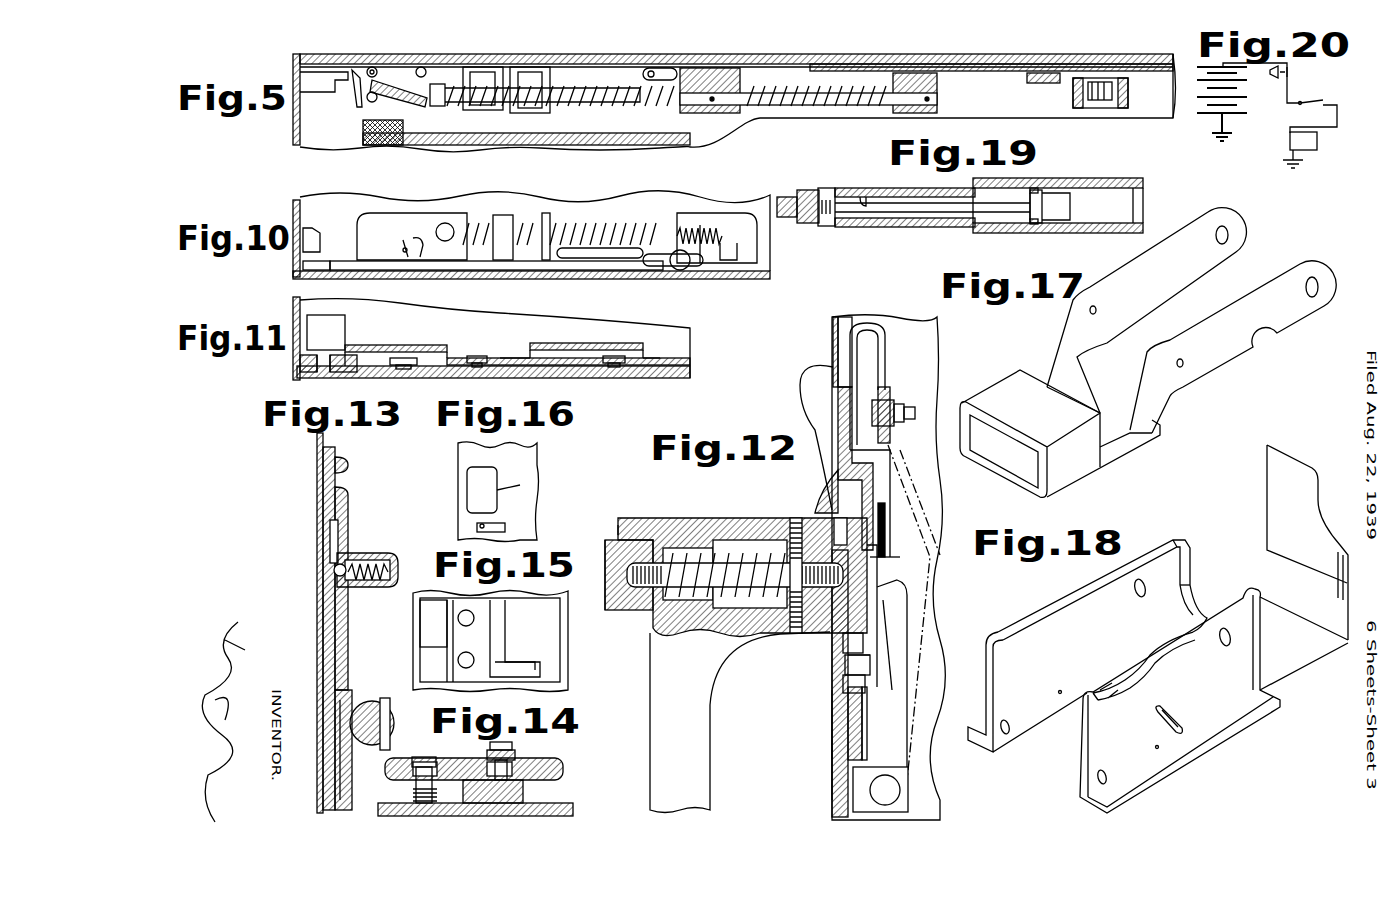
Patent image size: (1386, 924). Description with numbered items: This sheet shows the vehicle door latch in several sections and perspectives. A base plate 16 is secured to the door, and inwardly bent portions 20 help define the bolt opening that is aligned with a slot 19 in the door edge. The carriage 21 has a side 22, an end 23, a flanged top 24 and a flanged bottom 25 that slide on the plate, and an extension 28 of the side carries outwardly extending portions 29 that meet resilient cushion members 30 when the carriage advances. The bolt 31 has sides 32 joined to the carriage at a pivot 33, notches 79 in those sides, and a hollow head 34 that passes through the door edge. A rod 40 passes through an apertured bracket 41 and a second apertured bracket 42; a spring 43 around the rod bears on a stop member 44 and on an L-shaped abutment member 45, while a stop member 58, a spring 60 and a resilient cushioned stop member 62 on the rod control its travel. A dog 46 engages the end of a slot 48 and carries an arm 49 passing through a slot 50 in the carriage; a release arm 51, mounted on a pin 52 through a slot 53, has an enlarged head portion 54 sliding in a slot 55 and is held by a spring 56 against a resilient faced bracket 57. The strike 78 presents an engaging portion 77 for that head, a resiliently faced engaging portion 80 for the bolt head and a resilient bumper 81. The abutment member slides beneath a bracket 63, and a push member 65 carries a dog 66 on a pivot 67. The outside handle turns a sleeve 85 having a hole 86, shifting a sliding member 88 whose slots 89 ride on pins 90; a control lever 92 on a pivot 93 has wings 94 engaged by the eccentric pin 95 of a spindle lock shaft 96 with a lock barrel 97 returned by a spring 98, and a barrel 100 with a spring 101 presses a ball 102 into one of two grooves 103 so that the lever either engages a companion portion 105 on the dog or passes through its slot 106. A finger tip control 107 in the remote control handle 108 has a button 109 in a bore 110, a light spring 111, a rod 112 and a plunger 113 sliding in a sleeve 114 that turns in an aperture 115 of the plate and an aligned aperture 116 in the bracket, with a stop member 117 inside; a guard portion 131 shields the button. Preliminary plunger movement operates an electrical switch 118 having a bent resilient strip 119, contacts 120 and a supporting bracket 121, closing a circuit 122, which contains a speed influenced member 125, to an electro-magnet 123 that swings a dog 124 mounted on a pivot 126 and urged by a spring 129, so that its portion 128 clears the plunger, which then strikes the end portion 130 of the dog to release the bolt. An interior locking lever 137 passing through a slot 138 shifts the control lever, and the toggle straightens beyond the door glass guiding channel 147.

In FIG. 13, the base plate 16 is at (320, 655).
In FIG. 14, the base plate 16 is at (565, 805).
In FIG. 12, the base plate 16 is at (830, 695).
In FIG. 16, the slot 19 is at (520, 485).
In FIG. 5, the bent portions 20 is at (316, 95).
In FIG. 5, the carriage 21 is at (470, 66).
In FIG. 10, the carriage 21 is at (425, 220).
In FIG. 18, the carriage 21 is at (1019, 616).
In FIG. 18, the side 22 is at (1128, 668).
In FIG. 18, the end 23 is at (1183, 550).
In FIG. 18, the flanged top 24 is at (1058, 600).
In FIG. 18, the flanged bottom 25 is at (1100, 740).
In FIG. 18, the extension 28 is at (1287, 593).
In FIG. 5, the outwardly extending portions 29 is at (555, 66).
In FIG. 10, the outwardly extending portions 29 is at (548, 218).
In FIG. 18, the outwardly extending portions 29 is at (1270, 485).
In FIG. 10, the resilient cushion members 30 is at (510, 218).
In FIG. 5, the bolt 31 is at (356, 92).
In FIG. 10, the bolt 31 is at (338, 250).
In FIG. 17, the bolt 31 is at (1137, 455).
In FIG. 17, the bolt sides 32 is at (1215, 330).
In FIG. 10, the pivot 33 is at (455, 227).
In FIG. 5, the hollow head 34 is at (296, 72).
In FIG. 16, the hollow head 34 is at (463, 485).
In FIG. 17, the hollow head 34 is at (1000, 383).
In FIG. 5, the rod 40 is at (612, 104).
In FIG. 10, the apertured bracket 41 is at (738, 218).
In FIG. 13, the second apertured bracket 42 is at (350, 625).
In FIG. 5, the spring 43 is at (560, 106).
In FIG. 10, the spring 43 is at (585, 222).
In FIG. 5, the stop member 44 is at (428, 102).
In FIG. 5, the L-shaped abutment member 45 is at (783, 56).
In FIG. 13, the L-shaped abutment member 45 is at (334, 735).
In FIG. 12, the L-shaped abutment member 45 is at (845, 715).
In FIG. 5, the dog 46 is at (380, 70).
In FIG. 5, the slot 48 is at (425, 68).
In FIG. 10, the arm 49 is at (422, 270).
In FIG. 10, the slot 50 is at (410, 240).
In FIG. 18, the slot 50 is at (1172, 712).
In FIG. 10, the release arm 51 is at (500, 265).
In FIG. 10, the pin 52 is at (686, 268).
In FIG. 5, the slot 53 is at (665, 67).
In FIG. 10, the slot 53 is at (655, 268).
In FIG. 10, the enlarged head portion 54 is at (305, 258).
In FIG. 16, the enlarged head portion 54 is at (505, 528).
In FIG. 16, the slot 55 is at (478, 525).
In FIG. 10, the spring 56 is at (700, 210).
In FIG. 10, the resilient faced bracket 57 is at (730, 250).
In FIG. 5, the stop member 58 is at (710, 114).
In FIG. 5, the spring 60 is at (768, 106).
In FIG. 5, the resilient cushioned stop member 62 is at (912, 109).
In FIG. 13, the resilient cushioned stop member 62 is at (392, 705).
In FIG. 5, the bracket 63 is at (1032, 84).
In FIG. 14, the bracket 63 is at (525, 790).
In FIG. 12, the bracket 63 is at (870, 705).
In FIG. 5, the push member 65 is at (1162, 70).
In FIG. 13, the push member 65 is at (330, 700).
In FIG. 12, the push member 65 is at (835, 745).
In FIG. 5, the dog 66 is at (1075, 106).
In FIG. 12, the dog 66 is at (895, 685).
In FIG. 12, the pivot 67 is at (900, 788).
In FIG. 15, the engaging portion 77 is at (540, 672).
In FIG. 15, the strike 78 is at (530, 652).
In FIG. 17, the notches 79 is at (1155, 431).
In FIG. 15, the resiliently faced engaging portion 80 is at (495, 645).
In FIG. 15, the resilient bumper 81 is at (428, 640).
In FIG. 11, the sleeve 85 is at (336, 374).
In FIG. 11, the hole 86 is at (312, 374).
In FIG. 11, the sliding member 88 is at (543, 352).
In FIG. 11, the slots 89 is at (605, 352).
In FIG. 11, the pins 90 is at (645, 358).
In FIG. 11, the control lever 92 is at (550, 348).
In FIG. 13, the control lever 92 is at (325, 520).
In FIG. 11, the pivot 93 is at (473, 356).
In FIG. 11, the wings 94 is at (346, 328).
In FIG. 19, the eccentric pin 95 is at (828, 188).
In FIG. 19, the spindle lock shaft 96 is at (925, 188).
In FIG. 19, the lock barrel 97 is at (1098, 183).
In FIG. 19, the spring 98 is at (1053, 188).
In FIG. 13, the barrel 100 is at (368, 553).
In FIG. 13, the spring 101 is at (370, 587).
In FIG. 13, the ball 102 is at (334, 572).
In FIG. 13, the grooves 103 is at (330, 555).
In FIG. 12, the companion portion 105 is at (840, 665).
In FIG. 12, the slot 106 is at (840, 683).
In FIG. 12, the finger tip control 107 is at (622, 612).
In FIG. 12, the handle 108 is at (712, 752).
In FIG. 12, the button 109 is at (605, 588).
In FIG. 12, the bore 110 is at (645, 530).
In FIG. 12, the light spring 111 is at (695, 545).
In FIG. 12, the rod 112 is at (748, 550).
In FIG. 12, the plunger 113 is at (842, 640).
In FIG. 12, the sleeve 114 is at (840, 535).
In FIG. 12, the aperture 115 is at (846, 655).
In FIG. 12, the aperture 116 is at (870, 625).
In FIG. 12, the stop member 117 is at (792, 540).
In FIG. 14, the electrical switch 118 is at (515, 752).
In FIG. 12, the electrical switch 118 is at (892, 380).
In FIG. 20, the electrical switch 118 is at (1308, 106).
In FIG. 12, the bent resilient strip 119 is at (886, 335).
In FIG. 12, the contacts 120 is at (833, 360).
In FIG. 12, the supporting bracket 121 is at (899, 395).
In FIG. 20, the circuit 122 is at (1285, 98).
In FIG. 20, the electro-magnet 123 is at (1305, 150).
In FIG. 14, the dog 124 is at (467, 760).
In FIG. 12, the dog 124 is at (886, 513).
In FIG. 20, the speed influenced member 125 is at (1290, 72).
In FIG. 14, the pivot 126 is at (415, 760).
In FIG. 12, the portion 128 is at (886, 545).
In FIG. 14, the spring 129 is at (412, 797).
In FIG. 12, the end portion 130 is at (900, 585).
In FIG. 12, the guard portion 131 is at (617, 532).
In FIG. 12, the interior locking lever 137 is at (805, 395).
In FIG. 12, the slot 138 is at (842, 512).
In FIG. 5, the door glass guiding channel 147 is at (362, 133).